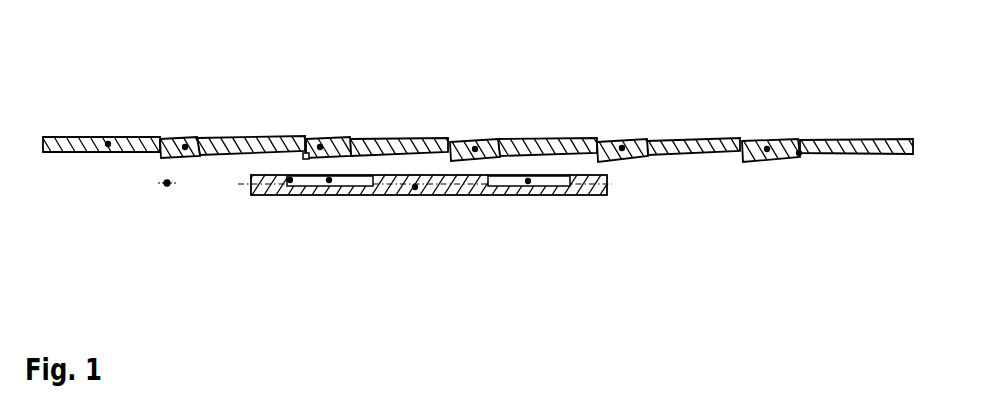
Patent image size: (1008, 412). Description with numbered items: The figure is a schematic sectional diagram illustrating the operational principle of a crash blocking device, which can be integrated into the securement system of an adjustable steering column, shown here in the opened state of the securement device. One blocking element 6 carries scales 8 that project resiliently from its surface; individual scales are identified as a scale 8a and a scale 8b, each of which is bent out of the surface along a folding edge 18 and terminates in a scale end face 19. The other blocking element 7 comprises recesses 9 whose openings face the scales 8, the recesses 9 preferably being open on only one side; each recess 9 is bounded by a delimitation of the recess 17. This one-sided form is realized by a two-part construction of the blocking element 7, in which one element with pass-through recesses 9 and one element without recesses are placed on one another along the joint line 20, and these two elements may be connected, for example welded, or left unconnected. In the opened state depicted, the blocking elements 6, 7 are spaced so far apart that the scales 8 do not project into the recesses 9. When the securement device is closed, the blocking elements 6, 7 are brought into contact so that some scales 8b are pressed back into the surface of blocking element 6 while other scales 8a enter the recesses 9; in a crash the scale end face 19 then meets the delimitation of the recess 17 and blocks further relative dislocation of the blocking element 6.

The blocking element 6 is at (106, 141).
The blocking element 7 is at (417, 190).
The scale 8 is at (184, 144).
The scale 8a is at (318, 144).
The scale 8b is at (474, 146).
The recess 9 is at (328, 184).
The delimitation of the recess 17 is at (288, 184).
The folding edge (or line) of scale 18 is at (798, 156).
The scale end face 19 is at (302, 153).
The joint line 20 is at (166, 186).